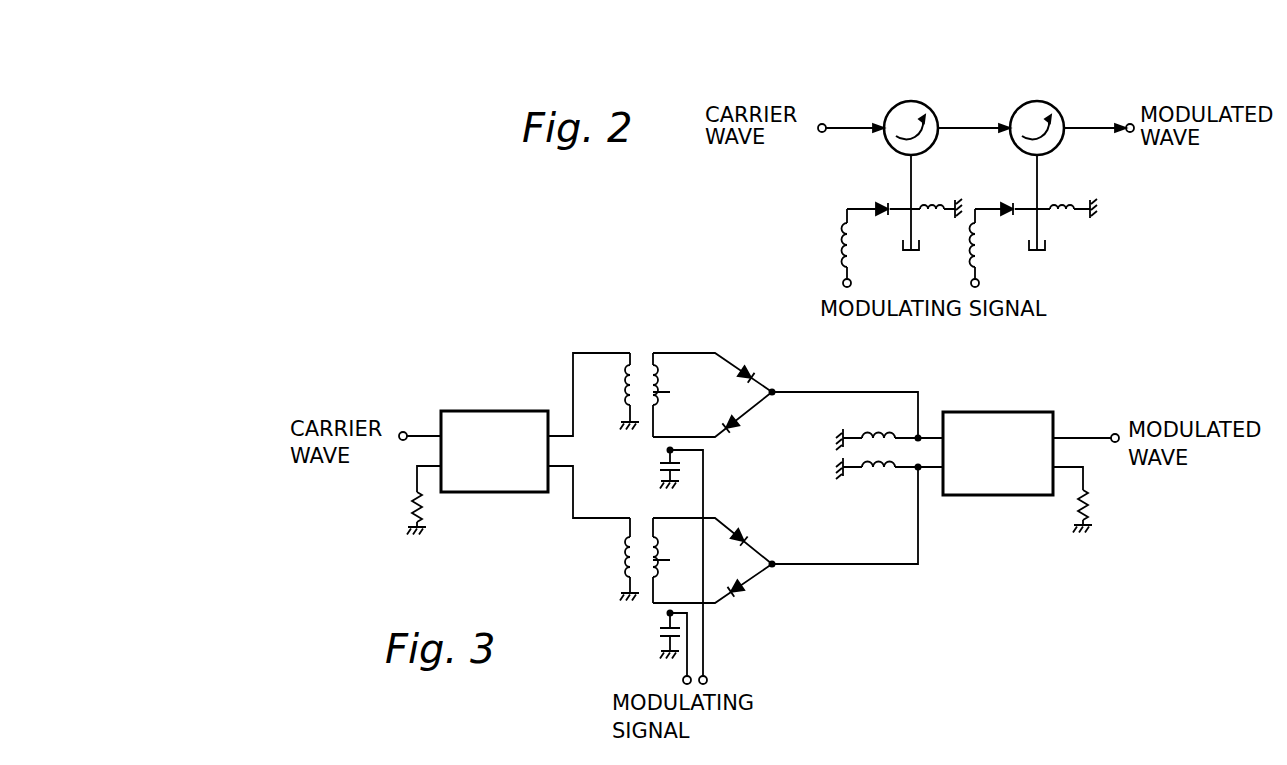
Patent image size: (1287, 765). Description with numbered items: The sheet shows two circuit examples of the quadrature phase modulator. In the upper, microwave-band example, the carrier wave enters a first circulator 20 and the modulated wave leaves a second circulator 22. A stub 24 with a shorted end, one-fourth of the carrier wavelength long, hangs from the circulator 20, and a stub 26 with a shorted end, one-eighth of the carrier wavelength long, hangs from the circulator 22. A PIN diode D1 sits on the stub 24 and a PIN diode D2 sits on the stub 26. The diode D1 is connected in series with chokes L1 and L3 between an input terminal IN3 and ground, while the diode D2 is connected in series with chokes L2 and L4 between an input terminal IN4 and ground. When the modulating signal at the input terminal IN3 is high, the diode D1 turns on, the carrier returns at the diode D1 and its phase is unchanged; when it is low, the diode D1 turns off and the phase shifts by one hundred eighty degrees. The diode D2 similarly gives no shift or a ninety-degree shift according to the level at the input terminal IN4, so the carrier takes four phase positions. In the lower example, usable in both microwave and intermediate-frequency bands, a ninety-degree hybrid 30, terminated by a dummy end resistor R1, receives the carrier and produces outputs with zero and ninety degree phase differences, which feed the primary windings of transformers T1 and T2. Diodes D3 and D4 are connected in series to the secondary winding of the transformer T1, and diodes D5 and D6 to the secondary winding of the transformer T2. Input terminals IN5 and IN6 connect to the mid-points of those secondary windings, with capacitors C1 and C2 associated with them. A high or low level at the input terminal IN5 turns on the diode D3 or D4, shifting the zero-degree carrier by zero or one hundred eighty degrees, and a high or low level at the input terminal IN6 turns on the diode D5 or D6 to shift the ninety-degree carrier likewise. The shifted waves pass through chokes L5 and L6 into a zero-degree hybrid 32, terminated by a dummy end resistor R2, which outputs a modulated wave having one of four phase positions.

In FIG. 2, the circulator 20 is at (933, 111).
In FIG. 2, the circulator 22 is at (1059, 110).
In FIG. 2, the stub 24 is at (920, 234).
In FIG. 2, the stub 26 is at (1046, 234).
In FIG. 3, the 90° hybrid 30 is at (490, 411).
In FIG. 3, the 0° hybrid 32 is at (1002, 412).
In FIG. 2, the diode D1 is at (881, 203).
In FIG. 2, the diode D2 is at (1013, 203).
In FIG. 3, the diode D3 is at (751, 368).
In FIG. 3, the diode D4 is at (742, 437).
In FIG. 3, the diode D5 is at (748, 539).
In FIG. 3, the diode D6 is at (738, 598).
In FIG. 2, the choke L1 is at (933, 203).
In FIG. 2, the choke L2 is at (1064, 203).
In FIG. 2, the choke L3 is at (831, 239).
In FIG. 2, the choke L4 is at (980, 250).
In FIG. 3, the choke L5 is at (874, 435).
In FIG. 3, the choke L6 is at (876, 470).
In FIG. 3, the capacitor C1 is at (660, 467).
In FIG. 3, the capacitor C2 is at (658, 635).
In FIG. 3, the dummy end resistor R1 is at (421, 518).
In FIG. 3, the dummy end resistor R2 is at (1090, 504).
In FIG. 3, the transformer T1 is at (645, 361).
In FIG. 3, the transformer T2 is at (641, 536).
In FIG. 2, the input terminal IN3 is at (864, 284).
In FIG. 2, the input terminal IN4 is at (992, 284).
In FIG. 3, the input terminal IN5 is at (721, 680).
In FIG. 3, the input terminal IN6 is at (667, 680).